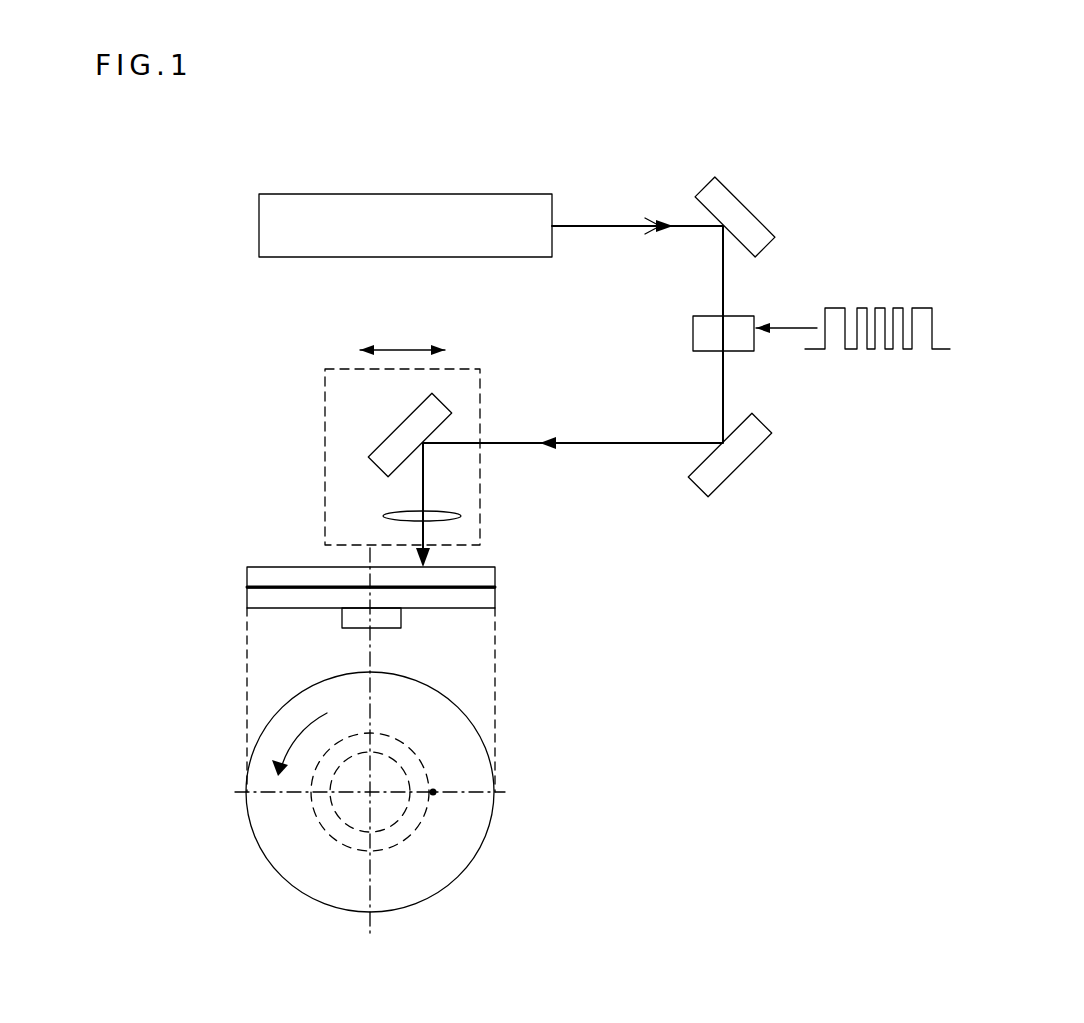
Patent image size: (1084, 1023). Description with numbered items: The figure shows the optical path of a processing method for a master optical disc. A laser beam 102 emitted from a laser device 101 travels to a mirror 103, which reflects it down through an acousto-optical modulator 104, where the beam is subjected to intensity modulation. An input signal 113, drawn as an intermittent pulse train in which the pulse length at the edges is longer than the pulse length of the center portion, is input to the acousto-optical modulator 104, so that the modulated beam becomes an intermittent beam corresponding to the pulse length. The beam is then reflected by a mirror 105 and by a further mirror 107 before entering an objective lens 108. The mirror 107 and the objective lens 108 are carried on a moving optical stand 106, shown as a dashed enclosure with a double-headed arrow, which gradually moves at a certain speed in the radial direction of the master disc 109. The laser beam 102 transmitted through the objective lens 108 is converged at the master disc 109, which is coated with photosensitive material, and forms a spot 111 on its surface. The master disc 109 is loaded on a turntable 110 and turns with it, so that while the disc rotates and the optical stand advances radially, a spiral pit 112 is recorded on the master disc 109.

The laser device 101 is at (335, 257).
The laser beam 102 is at (630, 227).
The mirror 103 is at (723, 183).
The acousto-optical modulator 104 is at (748, 355).
The mirror 105 is at (735, 473).
The moving optical stand 106 is at (470, 368).
The mirror 107 is at (400, 427).
The objective lens 108 is at (410, 512).
The master disc 109 is at (495, 585).
The turntable 110 is at (278, 607).
The spot 111 is at (423, 566).
The spiral pit 112 is at (332, 823).
The input signal 113 is at (838, 305).